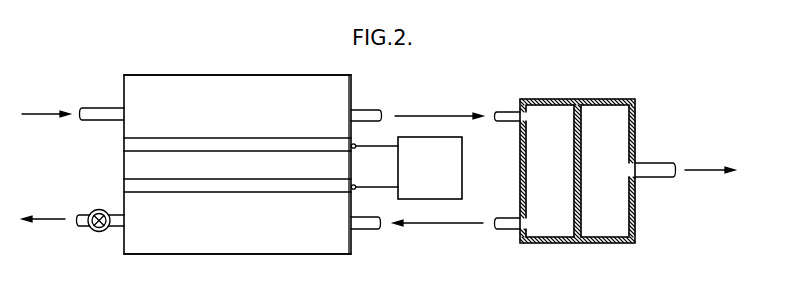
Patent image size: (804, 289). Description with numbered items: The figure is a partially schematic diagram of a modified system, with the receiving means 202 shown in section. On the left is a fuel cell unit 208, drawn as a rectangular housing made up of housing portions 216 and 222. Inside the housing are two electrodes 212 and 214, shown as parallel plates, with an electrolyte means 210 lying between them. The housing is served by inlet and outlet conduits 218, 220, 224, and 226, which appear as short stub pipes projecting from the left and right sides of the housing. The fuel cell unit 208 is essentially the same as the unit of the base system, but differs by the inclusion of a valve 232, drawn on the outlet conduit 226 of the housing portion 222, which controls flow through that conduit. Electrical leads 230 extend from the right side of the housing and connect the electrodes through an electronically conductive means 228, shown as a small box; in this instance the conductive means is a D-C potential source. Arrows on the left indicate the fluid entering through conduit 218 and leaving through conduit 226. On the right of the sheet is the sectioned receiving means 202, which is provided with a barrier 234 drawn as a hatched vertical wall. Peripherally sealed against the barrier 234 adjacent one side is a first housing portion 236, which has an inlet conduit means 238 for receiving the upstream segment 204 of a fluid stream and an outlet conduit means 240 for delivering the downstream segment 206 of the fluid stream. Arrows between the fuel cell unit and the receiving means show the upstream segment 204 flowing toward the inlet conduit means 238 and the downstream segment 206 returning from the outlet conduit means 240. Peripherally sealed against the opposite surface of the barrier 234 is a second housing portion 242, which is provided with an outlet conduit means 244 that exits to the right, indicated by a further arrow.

The receiving means 202 is at (621, 79).
The upstream segment of fluid stream 204 is at (38, 112).
The downstream segment of fluid stream 206 is at (43, 221).
The fuel cell unit 208 is at (201, 53).
The electrolyte means 210 is at (135, 167).
The electrode 212 is at (238, 138).
The electrode 214 is at (243, 187).
The housing portion 216 is at (285, 75).
The inlet conduit 218 is at (97, 108).
The outlet conduit 220 is at (367, 110).
The housing portion 222 is at (275, 254).
The outlet conduit 224 is at (368, 229).
The outlet conduit 226 is at (80, 215).
The electronically conductive means 228 is at (462, 167).
The electrical leads 230 is at (375, 147).
The valve 232 is at (98, 232).
The barrier 234 is at (580, 170).
The first housing portion 236 is at (547, 243).
The inlet conduit means 238 is at (502, 112).
The outlet conduit means 240 is at (503, 229).
The second housing portion 242 is at (612, 243).
The outlet conduit means 244 is at (662, 163).